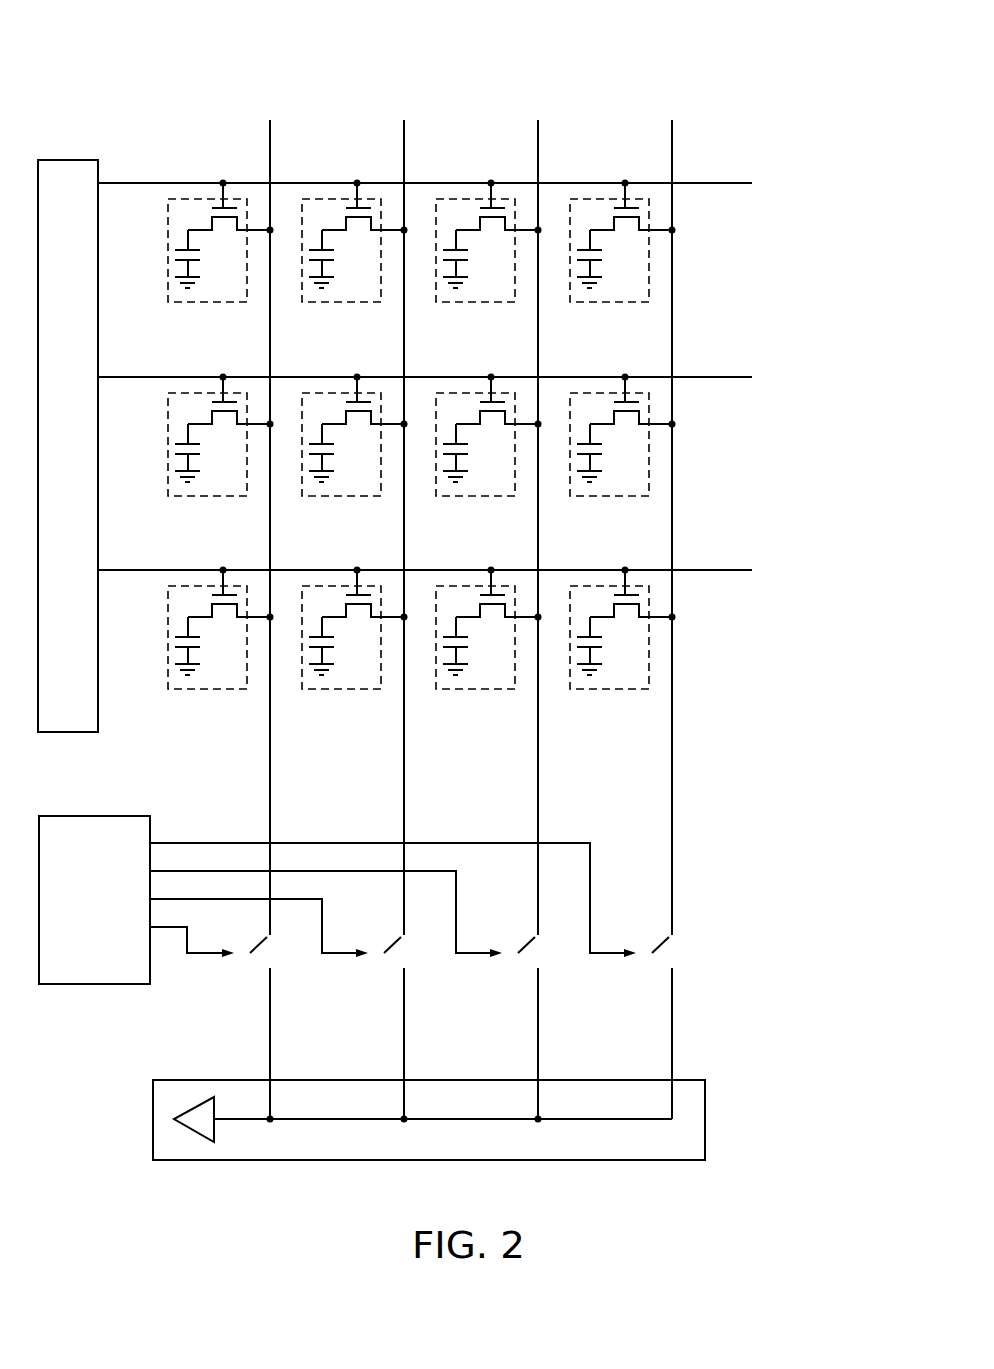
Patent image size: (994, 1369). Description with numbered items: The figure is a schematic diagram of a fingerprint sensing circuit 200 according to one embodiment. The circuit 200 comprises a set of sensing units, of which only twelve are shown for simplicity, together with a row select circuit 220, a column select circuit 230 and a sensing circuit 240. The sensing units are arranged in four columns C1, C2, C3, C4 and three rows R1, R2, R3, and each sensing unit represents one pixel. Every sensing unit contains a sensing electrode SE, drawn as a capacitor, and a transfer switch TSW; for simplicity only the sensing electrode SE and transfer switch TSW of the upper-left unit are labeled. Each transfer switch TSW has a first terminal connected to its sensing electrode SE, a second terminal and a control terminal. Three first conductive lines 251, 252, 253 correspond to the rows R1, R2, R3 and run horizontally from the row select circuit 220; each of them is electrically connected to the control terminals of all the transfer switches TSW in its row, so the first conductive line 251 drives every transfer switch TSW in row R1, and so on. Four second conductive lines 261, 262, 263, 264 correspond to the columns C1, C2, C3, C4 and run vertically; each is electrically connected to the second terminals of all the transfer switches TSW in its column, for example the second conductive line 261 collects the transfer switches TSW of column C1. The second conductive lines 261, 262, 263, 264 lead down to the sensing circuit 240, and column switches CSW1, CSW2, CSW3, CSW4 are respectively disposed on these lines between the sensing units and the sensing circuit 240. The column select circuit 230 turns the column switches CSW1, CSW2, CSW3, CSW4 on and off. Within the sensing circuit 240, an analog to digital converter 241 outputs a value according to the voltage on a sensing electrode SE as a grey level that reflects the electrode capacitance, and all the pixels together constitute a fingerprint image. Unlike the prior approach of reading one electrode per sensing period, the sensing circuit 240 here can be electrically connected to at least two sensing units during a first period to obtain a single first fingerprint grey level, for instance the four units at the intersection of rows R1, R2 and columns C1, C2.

The fingerprint sensing circuit 200 is at (69, 24).
The transfer switch TSW is at (197, 146).
The sensing electrode SE is at (154, 259).
The row select circuit 220 is at (57, 556).
The column select circuit 230 is at (76, 948).
The sensing circuit 240 is at (706, 1119).
The analog to digital converter 241 is at (195, 1131).
The first conductive line 251 is at (722, 183).
The first conductive line 252 is at (722, 377).
The first conductive line 253 is at (722, 570).
The second conductive line 261 is at (270, 783).
The second conductive line 262 is at (404, 783).
The second conductive line 263 is at (538, 783).
The second conductive line 264 is at (672, 783).
The column C1 is at (270, 86).
The column C2 is at (404, 86).
The column C3 is at (538, 86).
The column C4 is at (672, 86).
The row R1 is at (779, 183).
The row R2 is at (779, 377).
The row R3 is at (779, 570).
The column switch CSW1 is at (250, 977).
The column switch CSW2 is at (384, 977).
The column switch CSW3 is at (518, 977).
The column switch CSW4 is at (652, 977).